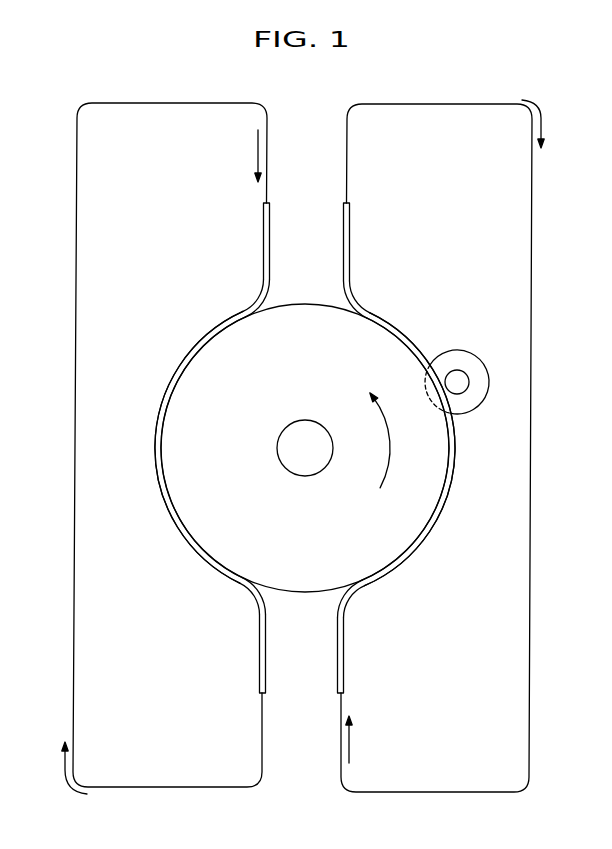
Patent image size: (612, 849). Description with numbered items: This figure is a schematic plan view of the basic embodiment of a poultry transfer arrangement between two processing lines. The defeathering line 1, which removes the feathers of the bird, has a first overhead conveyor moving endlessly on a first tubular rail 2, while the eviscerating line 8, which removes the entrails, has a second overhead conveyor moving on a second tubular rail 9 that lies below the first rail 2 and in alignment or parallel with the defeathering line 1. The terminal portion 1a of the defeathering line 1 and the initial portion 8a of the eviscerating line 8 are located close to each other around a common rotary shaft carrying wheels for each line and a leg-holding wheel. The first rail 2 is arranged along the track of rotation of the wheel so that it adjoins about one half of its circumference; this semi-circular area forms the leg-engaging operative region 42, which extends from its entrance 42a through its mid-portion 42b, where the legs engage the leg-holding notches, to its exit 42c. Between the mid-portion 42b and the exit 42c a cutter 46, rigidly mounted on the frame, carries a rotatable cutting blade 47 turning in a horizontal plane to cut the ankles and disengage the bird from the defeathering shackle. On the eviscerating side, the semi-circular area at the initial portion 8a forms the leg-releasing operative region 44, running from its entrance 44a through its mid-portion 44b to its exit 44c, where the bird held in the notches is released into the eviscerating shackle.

The defeathering line 1 is at (534, 477).
The terminal portion of the defeathering line 1a is at (428, 541).
The first tubular rail 2 is at (352, 218).
The eviscerating line 8 is at (72, 480).
The initial portion of the eviscerating line 8a is at (157, 394).
The second tubular rail 9 is at (261, 211).
The leg-engaging operative region 42 is at (426, 448).
The entrance of the leg-engaging operative region 42a is at (352, 596).
The mid-portion of the leg-engaging operative region 42b is at (455, 447).
The exit of the leg-engaging operative region 42c is at (363, 309).
The leg-releasing operative region 44 is at (179, 447).
The entrance of the leg-releasing operative region 44a is at (253, 309).
The mid-portion of the leg-releasing operative region 44b is at (155, 440).
The exit of the leg-releasing operative region 44c is at (249, 594).
The cutter 46 is at (470, 366).
The rotatable cutting blade 47 is at (466, 351).